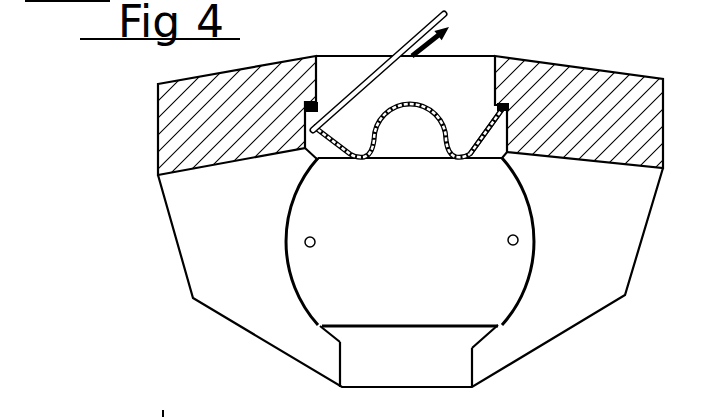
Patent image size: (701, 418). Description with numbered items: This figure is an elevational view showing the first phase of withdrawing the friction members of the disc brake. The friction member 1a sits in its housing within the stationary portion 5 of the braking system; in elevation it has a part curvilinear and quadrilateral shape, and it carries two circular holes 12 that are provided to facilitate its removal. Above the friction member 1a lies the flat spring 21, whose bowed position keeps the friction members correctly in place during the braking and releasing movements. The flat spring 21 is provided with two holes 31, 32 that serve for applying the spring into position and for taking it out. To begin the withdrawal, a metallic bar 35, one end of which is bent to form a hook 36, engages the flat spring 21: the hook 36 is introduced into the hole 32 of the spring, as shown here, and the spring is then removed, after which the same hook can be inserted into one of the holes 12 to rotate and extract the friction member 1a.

The stationary portion 5 is at (570, 88).
The friction member 1a is at (510, 275).
The hook 36 is at (300, 160).
The holes 12 is at (311, 236).
The flat spring 21 is at (408, 105).
The hole 31 is at (493, 121).
The hole 32 is at (318, 110).
The metallic bar 35 is at (420, 28).